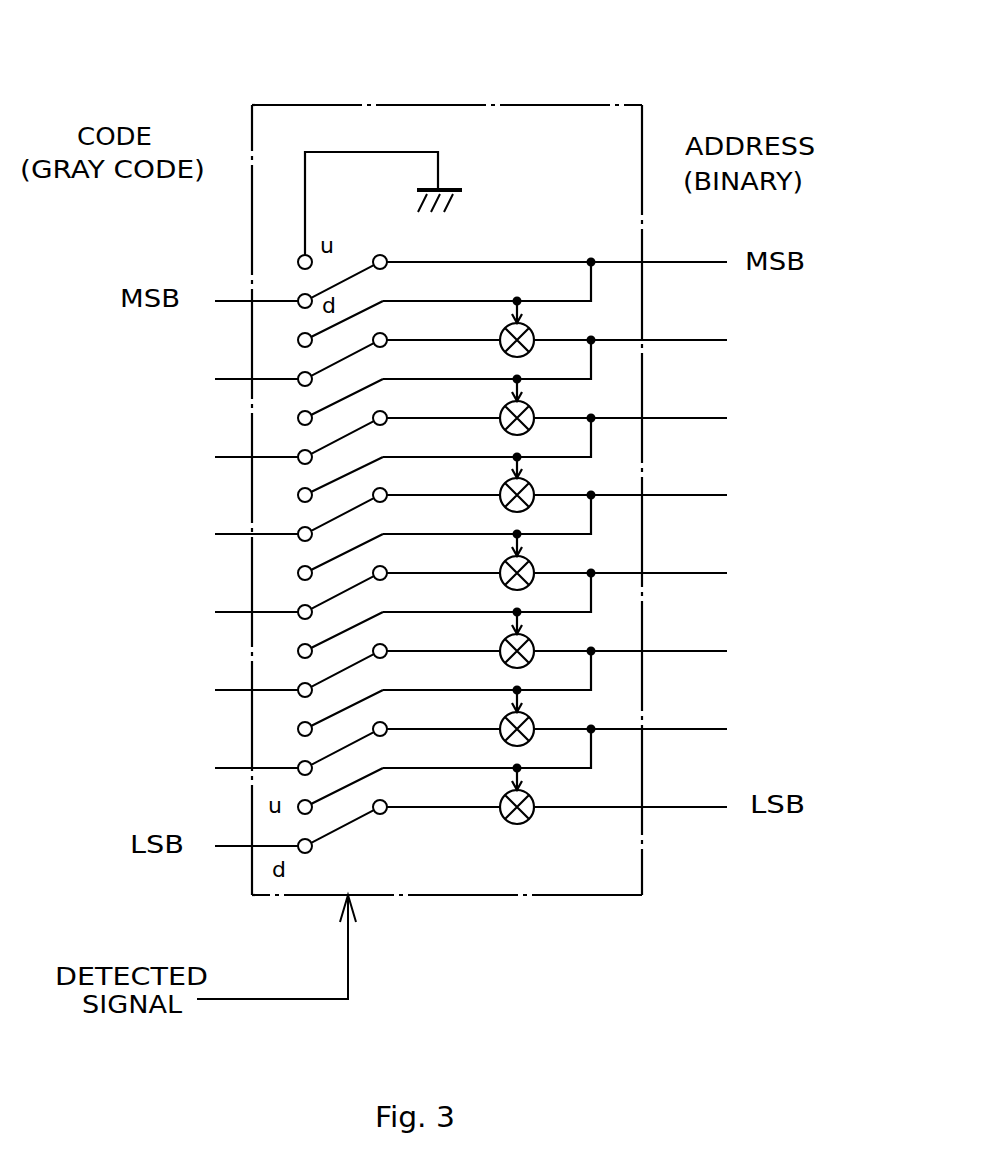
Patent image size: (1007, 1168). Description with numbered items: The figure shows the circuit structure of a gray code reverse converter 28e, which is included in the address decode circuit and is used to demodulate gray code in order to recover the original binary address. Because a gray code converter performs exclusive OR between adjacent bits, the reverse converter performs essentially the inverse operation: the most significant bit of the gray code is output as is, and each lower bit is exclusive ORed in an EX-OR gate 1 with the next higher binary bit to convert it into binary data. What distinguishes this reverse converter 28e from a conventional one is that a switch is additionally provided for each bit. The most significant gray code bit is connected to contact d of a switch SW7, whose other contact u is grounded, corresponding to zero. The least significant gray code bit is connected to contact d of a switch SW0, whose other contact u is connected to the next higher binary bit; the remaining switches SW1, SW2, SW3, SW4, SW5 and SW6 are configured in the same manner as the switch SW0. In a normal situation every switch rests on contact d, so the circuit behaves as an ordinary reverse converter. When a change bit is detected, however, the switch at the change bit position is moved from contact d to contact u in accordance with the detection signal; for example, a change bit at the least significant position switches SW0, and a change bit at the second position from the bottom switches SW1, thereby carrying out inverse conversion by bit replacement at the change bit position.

The gray code reverse converter 28e is at (460, 105).
The EX-OR gate 1 is at (527, 822).
The switch SW7 is at (348, 284).
The switch SW6 is at (345, 365).
The switch SW5 is at (345, 445).
The switch SW4 is at (345, 518).
The switch SW3 is at (345, 593).
The switch SW2 is at (345, 668).
The switch SW1 is at (345, 756).
The switch SW0 is at (343, 827).